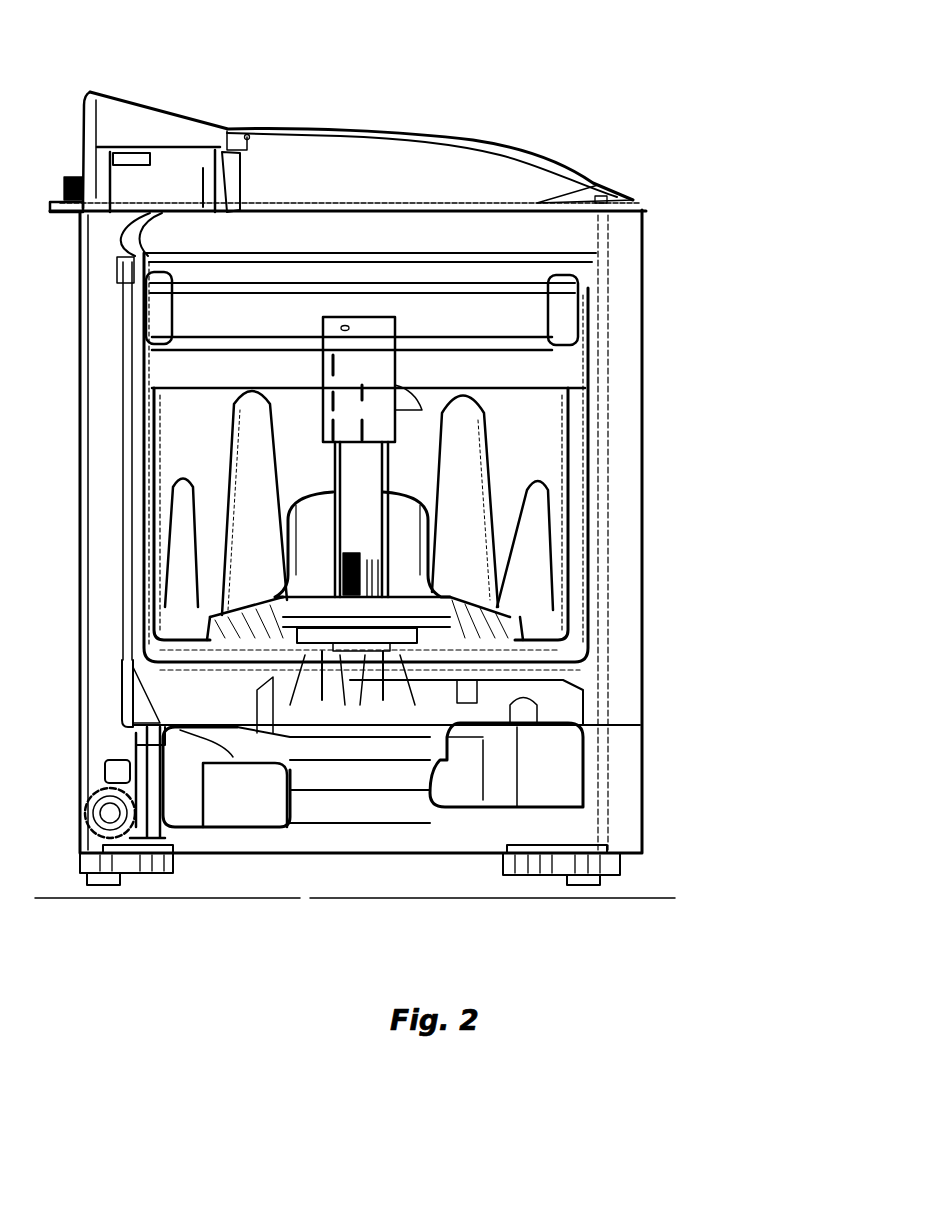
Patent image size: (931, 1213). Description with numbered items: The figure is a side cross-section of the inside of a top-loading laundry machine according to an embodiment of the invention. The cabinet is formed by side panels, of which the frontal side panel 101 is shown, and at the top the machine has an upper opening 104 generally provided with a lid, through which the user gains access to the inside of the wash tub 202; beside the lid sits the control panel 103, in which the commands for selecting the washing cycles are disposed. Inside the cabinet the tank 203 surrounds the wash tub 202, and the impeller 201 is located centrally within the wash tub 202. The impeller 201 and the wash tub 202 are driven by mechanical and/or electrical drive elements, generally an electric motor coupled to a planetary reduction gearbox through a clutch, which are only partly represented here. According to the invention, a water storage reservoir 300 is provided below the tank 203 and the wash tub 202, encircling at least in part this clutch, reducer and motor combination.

The frontal side panel 101 is at (642, 715).
The control panel 103 is at (140, 102).
The upper opening 104 is at (411, 136).
The impeller 201 is at (397, 345).
The wash tub 202 is at (567, 478).
The tank 203 is at (588, 552).
The water storage reservoir 300 is at (583, 777).